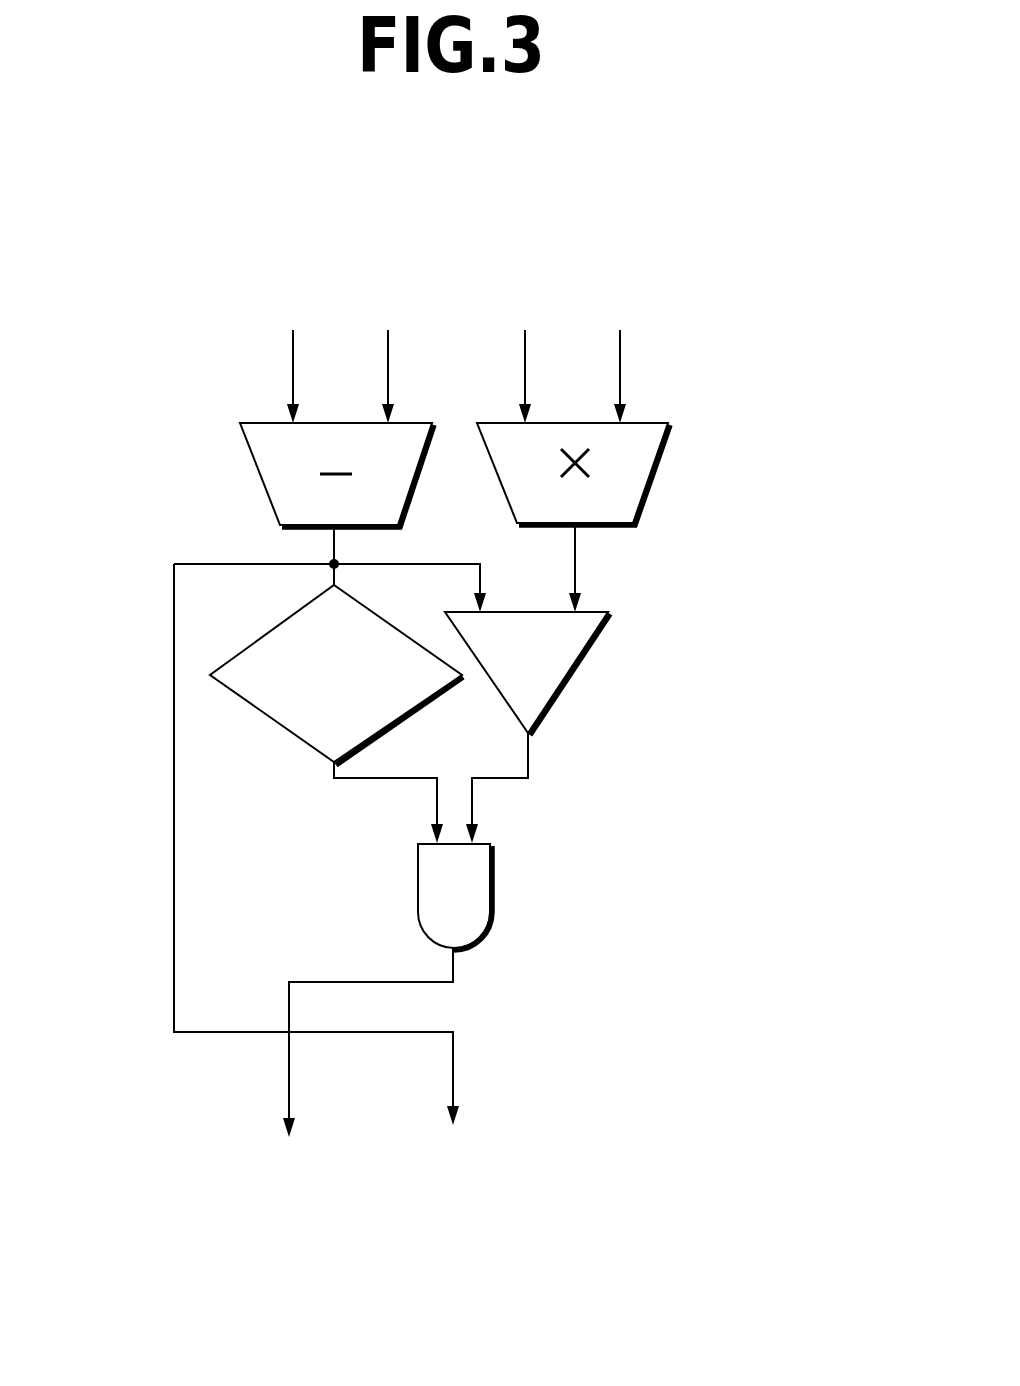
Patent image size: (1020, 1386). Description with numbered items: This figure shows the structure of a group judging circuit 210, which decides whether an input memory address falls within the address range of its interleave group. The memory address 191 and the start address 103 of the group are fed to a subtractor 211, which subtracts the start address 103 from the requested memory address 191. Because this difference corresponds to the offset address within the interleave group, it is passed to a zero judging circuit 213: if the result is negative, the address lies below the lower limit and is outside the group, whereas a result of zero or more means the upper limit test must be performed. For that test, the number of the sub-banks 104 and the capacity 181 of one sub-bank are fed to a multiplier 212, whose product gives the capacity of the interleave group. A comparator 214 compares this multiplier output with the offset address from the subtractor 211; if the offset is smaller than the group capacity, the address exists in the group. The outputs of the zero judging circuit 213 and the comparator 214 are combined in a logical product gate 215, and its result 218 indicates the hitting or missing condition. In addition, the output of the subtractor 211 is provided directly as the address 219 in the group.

The group judging circuit 210 is at (700, 1022).
The subtractor 211 is at (257, 468).
The multiplier 212 is at (657, 473).
The zero judging circuit 213 is at (280, 730).
The comparator 214 is at (560, 685).
The logical product gate 215 is at (493, 883).
The result 218 is at (289, 1068).
The address in the group 219 is at (453, 1068).
The memory address 191 is at (293, 347).
The start address 103 is at (388, 350).
The number of the sub-banks 104 is at (525, 350).
The capacity of one sub-bank 181 is at (620, 353).